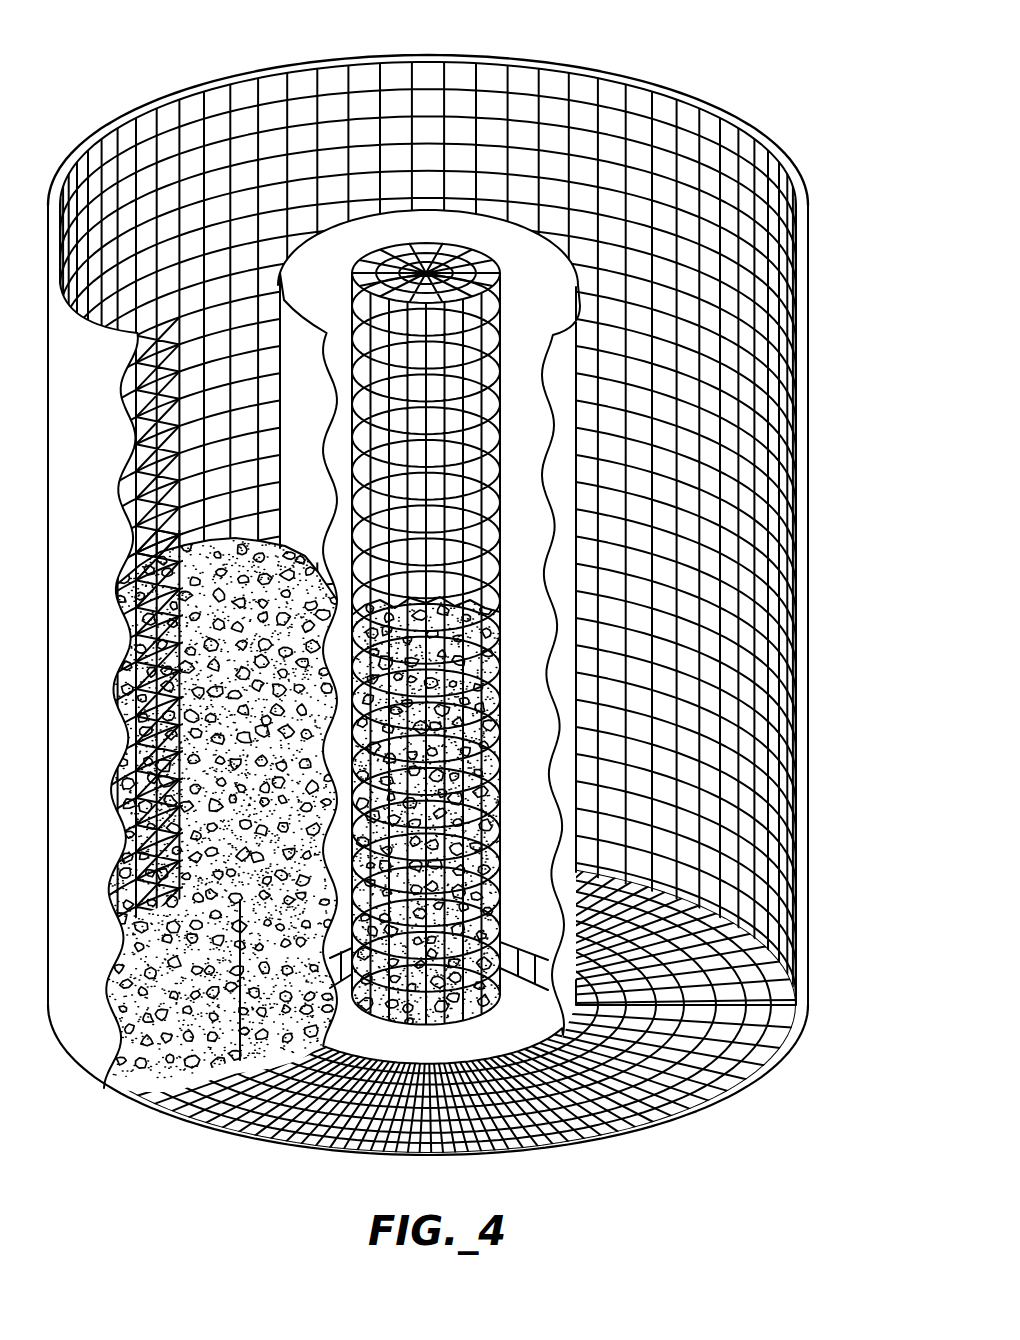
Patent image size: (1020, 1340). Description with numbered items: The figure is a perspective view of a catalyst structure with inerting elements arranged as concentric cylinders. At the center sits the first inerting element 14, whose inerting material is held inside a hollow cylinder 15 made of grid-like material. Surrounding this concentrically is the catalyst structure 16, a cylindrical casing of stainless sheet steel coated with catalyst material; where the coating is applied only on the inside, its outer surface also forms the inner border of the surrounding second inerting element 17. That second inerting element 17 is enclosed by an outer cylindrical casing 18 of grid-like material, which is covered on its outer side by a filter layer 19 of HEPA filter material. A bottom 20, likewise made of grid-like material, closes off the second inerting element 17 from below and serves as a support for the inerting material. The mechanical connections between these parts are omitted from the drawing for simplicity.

The first inerting element 14 is at (477, 258).
The hollow cylinder 15 is at (502, 418).
The catalyst structure 16 is at (522, 521).
The second inerting element 17 is at (223, 1067).
The outer cylindrical casing 18 is at (125, 148).
The filter layer 19 is at (105, 1060).
The bottom 20 is at (713, 1097).